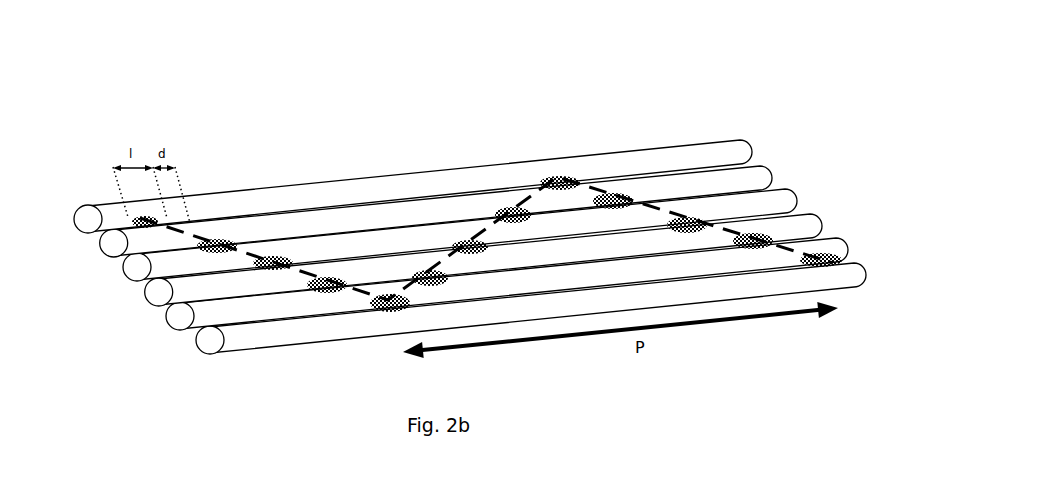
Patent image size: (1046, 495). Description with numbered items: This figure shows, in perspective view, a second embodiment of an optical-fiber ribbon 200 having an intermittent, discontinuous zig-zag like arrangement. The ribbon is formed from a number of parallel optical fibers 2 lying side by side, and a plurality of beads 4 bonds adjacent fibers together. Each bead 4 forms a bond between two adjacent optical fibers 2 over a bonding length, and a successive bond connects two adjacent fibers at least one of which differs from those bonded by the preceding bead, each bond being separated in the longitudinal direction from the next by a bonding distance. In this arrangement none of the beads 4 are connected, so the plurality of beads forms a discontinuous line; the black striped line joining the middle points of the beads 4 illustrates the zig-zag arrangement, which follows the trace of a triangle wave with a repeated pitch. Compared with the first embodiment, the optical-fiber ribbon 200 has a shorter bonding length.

The optical-fiber ribbon 200 is at (470, 197).
The fibers 2 is at (552, 166).
The beads 4 is at (226, 234).